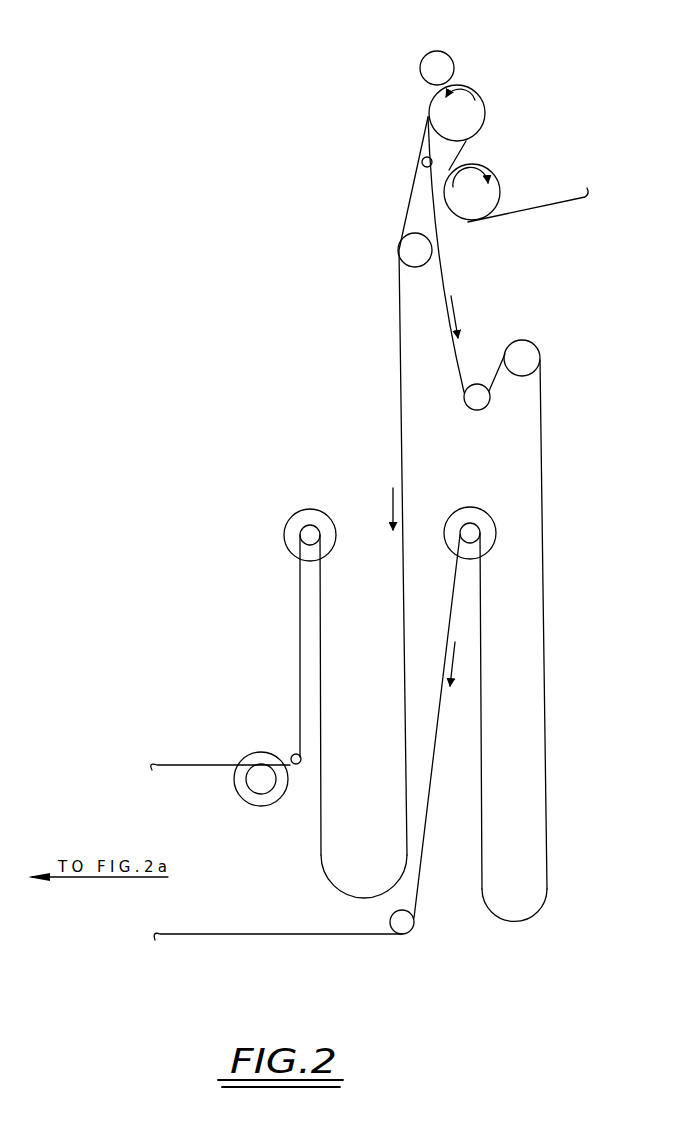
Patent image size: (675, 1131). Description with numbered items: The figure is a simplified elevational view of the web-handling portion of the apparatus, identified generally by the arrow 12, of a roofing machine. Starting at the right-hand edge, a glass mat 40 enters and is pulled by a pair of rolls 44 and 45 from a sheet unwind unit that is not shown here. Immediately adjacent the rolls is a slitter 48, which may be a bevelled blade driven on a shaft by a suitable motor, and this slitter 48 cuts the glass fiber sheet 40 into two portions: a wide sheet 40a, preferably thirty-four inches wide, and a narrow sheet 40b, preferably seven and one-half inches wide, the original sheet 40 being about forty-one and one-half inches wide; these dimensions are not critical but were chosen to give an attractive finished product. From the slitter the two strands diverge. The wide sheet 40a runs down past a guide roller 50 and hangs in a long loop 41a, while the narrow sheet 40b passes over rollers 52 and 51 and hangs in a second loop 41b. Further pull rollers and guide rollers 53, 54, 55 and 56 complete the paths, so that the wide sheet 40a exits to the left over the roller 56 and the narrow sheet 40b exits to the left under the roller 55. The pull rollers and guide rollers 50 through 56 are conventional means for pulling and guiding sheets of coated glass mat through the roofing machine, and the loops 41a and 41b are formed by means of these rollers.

The web handling apparatus 12 is at (477, 79).
The glass mat 40 is at (563, 203).
The wide sheet 40a is at (396, 368).
The narrow sheet 40b is at (440, 275).
The loop 41a is at (366, 898).
The loop 41b is at (514, 922).
The roll 44 is at (483, 112).
The roll 45 is at (490, 178).
The slitter 48 is at (443, 58).
The pull roller and guide roller 50 is at (412, 248).
The pull roller and guide roller 51 is at (520, 354).
The pull roller and guide roller 52 is at (477, 403).
The pull roller and guide roller 53 is at (470, 530).
The pull roller and guide roller 54 is at (311, 532).
The pull roller and guide roller 55 is at (402, 926).
The pull roller and guide roller 56 is at (262, 777).